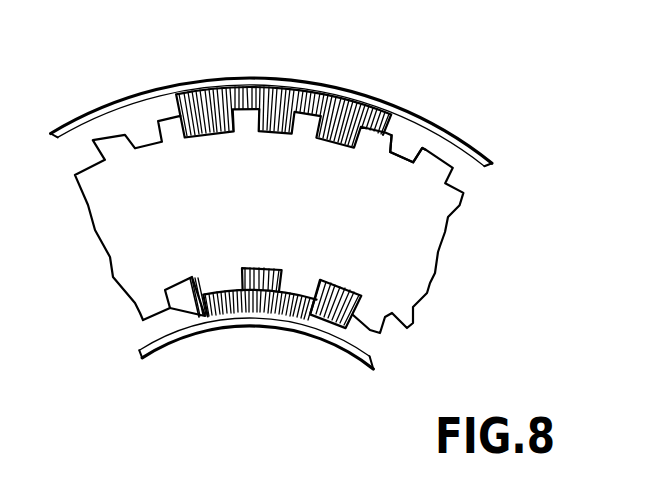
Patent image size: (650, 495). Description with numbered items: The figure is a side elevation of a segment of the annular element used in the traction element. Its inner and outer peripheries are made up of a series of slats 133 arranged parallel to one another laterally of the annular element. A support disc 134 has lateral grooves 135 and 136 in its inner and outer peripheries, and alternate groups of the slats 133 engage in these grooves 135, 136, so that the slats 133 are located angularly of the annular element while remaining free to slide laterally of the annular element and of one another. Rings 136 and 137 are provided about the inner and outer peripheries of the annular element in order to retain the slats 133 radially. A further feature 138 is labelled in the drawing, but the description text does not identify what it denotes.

The slats 133 is at (206, 102).
The support disc 134 is at (428, 247).
The lateral groove 135 is at (180, 292).
The lateral groove 136 is at (368, 364).
The ring 137 is at (335, 88).
The projection 138 is at (413, 145).